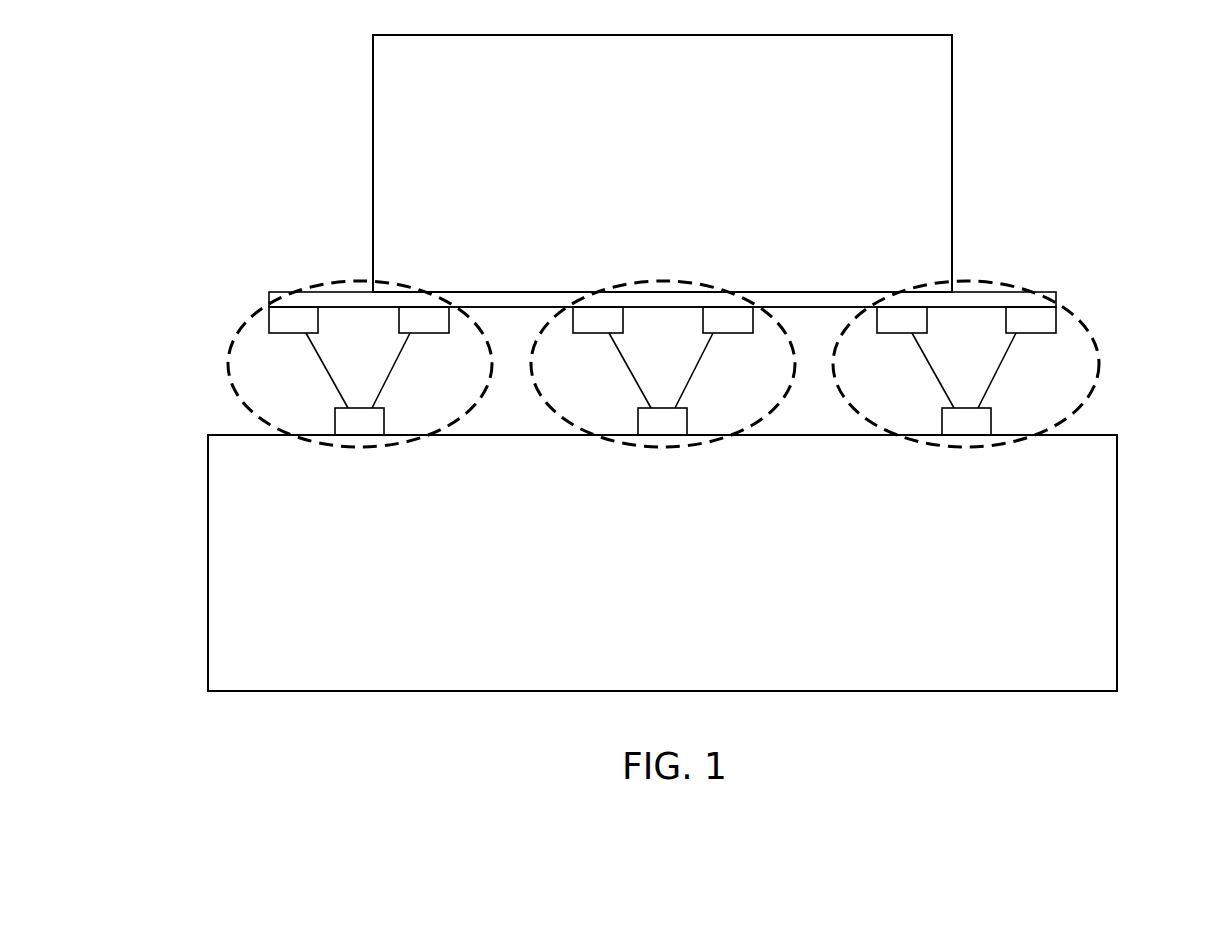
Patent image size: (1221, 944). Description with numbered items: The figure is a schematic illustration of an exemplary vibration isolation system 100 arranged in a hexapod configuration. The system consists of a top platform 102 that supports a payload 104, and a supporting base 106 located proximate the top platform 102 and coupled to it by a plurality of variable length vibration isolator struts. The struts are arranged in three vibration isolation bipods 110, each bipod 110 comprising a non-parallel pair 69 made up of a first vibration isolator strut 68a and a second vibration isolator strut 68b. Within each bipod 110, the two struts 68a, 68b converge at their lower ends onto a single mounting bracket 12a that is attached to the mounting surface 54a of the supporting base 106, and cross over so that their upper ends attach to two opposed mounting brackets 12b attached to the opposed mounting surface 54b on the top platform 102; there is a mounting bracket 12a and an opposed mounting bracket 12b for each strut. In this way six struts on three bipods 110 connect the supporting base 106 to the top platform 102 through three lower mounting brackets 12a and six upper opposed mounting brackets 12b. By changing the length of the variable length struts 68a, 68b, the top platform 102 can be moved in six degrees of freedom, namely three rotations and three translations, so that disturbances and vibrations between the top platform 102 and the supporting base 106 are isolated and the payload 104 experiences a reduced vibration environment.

The vibration isolation system 100 is at (1019, 264).
The top platform 102 is at (465, 300).
The payload 104 is at (684, 137).
The supporting base 106 is at (687, 603).
The vibration isolation bipod 110 is at (215, 346).
The mounting bracket 12a is at (360, 427).
The opposed mounting bracket 12b is at (398, 317).
The mounting surface 54a is at (1100, 435).
The opposed mounting surface 54b is at (506, 302).
The first vibration isolator strut 68a is at (319, 370).
The second vibration isolator strut 68b is at (402, 370).
The non-parallel pair 69 is at (400, 350).